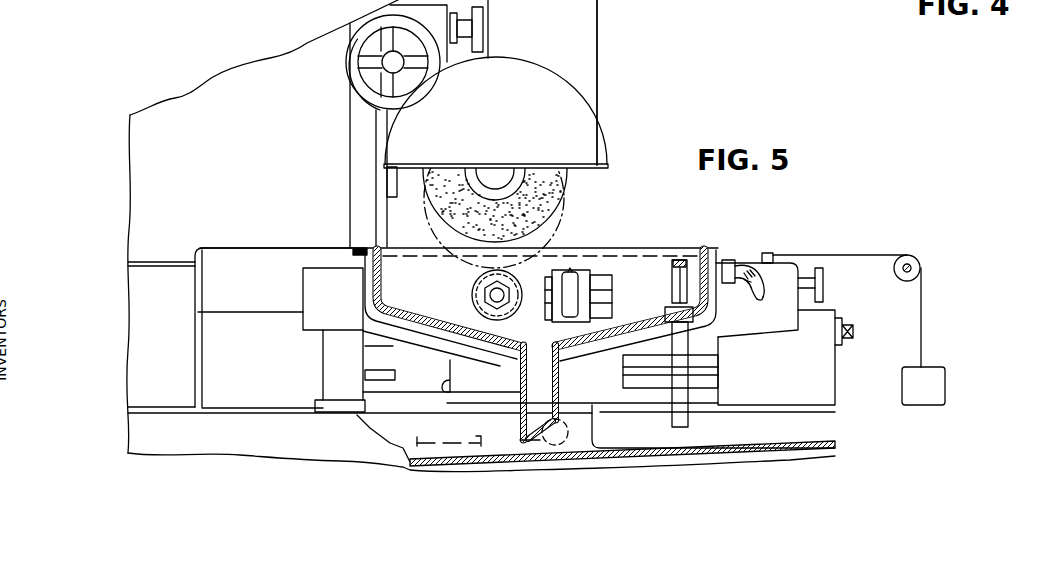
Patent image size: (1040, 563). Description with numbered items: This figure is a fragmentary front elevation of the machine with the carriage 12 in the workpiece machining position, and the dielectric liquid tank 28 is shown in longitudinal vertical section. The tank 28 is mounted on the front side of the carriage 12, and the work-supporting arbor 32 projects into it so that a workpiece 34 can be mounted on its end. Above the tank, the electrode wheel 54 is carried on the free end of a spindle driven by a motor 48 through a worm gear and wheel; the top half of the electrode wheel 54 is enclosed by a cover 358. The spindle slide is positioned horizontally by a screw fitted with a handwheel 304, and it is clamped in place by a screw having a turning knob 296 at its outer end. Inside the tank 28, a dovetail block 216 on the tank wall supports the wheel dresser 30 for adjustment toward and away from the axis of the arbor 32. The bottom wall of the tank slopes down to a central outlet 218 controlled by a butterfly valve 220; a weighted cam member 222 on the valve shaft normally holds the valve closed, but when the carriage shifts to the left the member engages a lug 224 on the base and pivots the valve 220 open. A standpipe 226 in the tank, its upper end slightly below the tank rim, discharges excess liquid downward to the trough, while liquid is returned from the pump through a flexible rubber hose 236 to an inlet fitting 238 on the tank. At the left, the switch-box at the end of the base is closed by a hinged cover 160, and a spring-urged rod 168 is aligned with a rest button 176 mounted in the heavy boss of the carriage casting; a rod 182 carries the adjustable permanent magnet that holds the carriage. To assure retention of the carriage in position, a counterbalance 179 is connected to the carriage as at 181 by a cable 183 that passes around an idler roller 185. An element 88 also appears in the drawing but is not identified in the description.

The carriage 12 is at (651, 246).
The dielectric liquid tank 28 is at (386, 289).
The wheel dresser 30 is at (570, 270).
The work-supporting arbor 32 is at (500, 301).
The workpiece 34 is at (473, 298).
The motor 48 is at (590, 42).
The electrode wheel 54 is at (565, 180).
The handle 88 is at (823, 283).
The hinged cover 160 is at (153, 277).
The rod 168 is at (383, 372).
The rest button 176 is at (443, 392).
The counterbalance 179 is at (933, 385).
The cable connection 181 is at (778, 254).
The rod 182 is at (716, 372).
The cable 183 is at (923, 317).
The idler roller 185 is at (918, 266).
The dovetail block 216 is at (612, 282).
The outlet 218 is at (551, 380).
The butterfly valve 220 is at (527, 432).
The weighted cam member 222 is at (572, 433).
The lug 224 is at (438, 436).
The standpipe 226 is at (672, 290).
The flexible rubber hose 236 is at (757, 292).
The inlet fitting 238 is at (729, 260).
The turning knob 296 is at (483, 25).
The handwheel 304 is at (350, 68).
The cover 358 is at (567, 93).